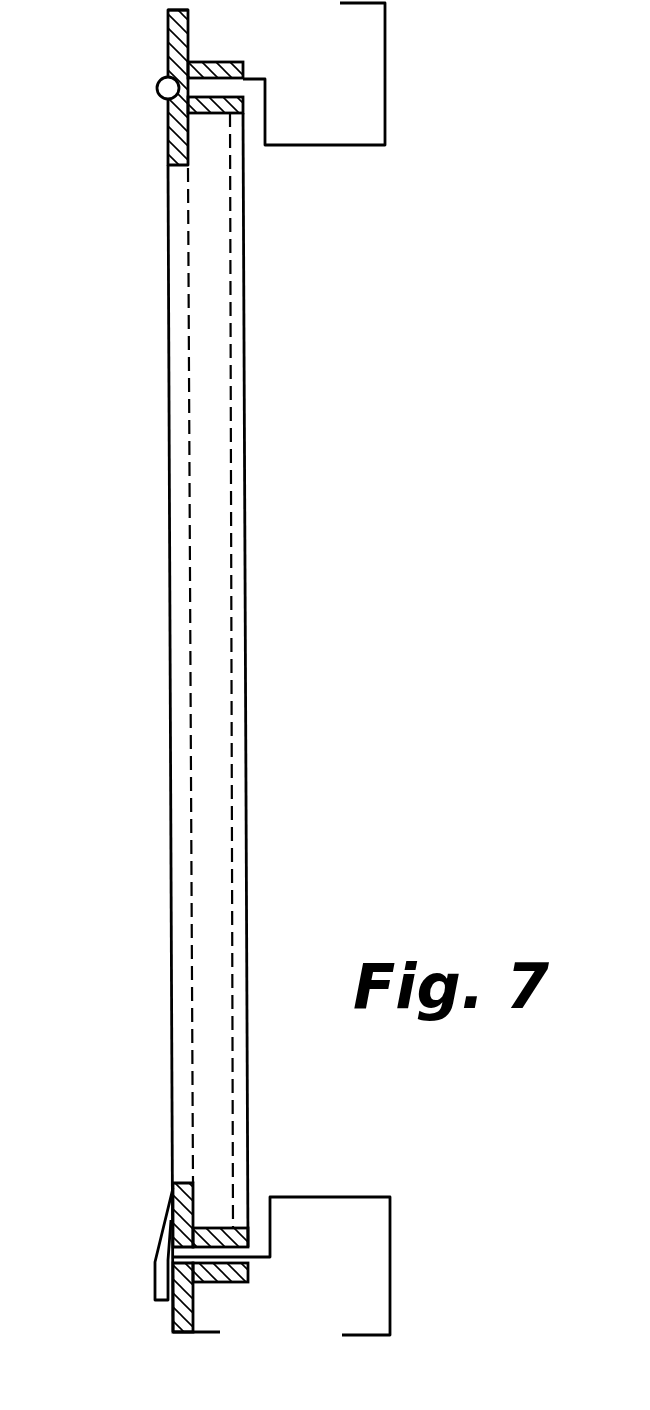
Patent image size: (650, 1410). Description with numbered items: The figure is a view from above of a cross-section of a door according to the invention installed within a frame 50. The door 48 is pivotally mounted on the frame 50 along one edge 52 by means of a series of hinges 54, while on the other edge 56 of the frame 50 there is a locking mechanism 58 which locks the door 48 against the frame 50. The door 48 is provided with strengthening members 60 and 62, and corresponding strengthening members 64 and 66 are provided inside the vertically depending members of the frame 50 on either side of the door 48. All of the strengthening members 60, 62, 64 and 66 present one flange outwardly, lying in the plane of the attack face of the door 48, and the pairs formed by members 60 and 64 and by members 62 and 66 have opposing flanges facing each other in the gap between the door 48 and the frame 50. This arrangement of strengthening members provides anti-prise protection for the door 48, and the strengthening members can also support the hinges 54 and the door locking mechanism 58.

The door 48 is at (262, 460).
The frame 50 is at (400, 58).
The edge 52 is at (168, 107).
The hinges 54 is at (158, 82).
The other edge 56 is at (175, 1220).
The locking mechanism 58 is at (155, 1282).
The strengthening member 60 is at (168, 152).
The strengthening member 62 is at (177, 1197).
The strengthening member 64 is at (168, 42).
The strengthening member 66 is at (173, 1318).